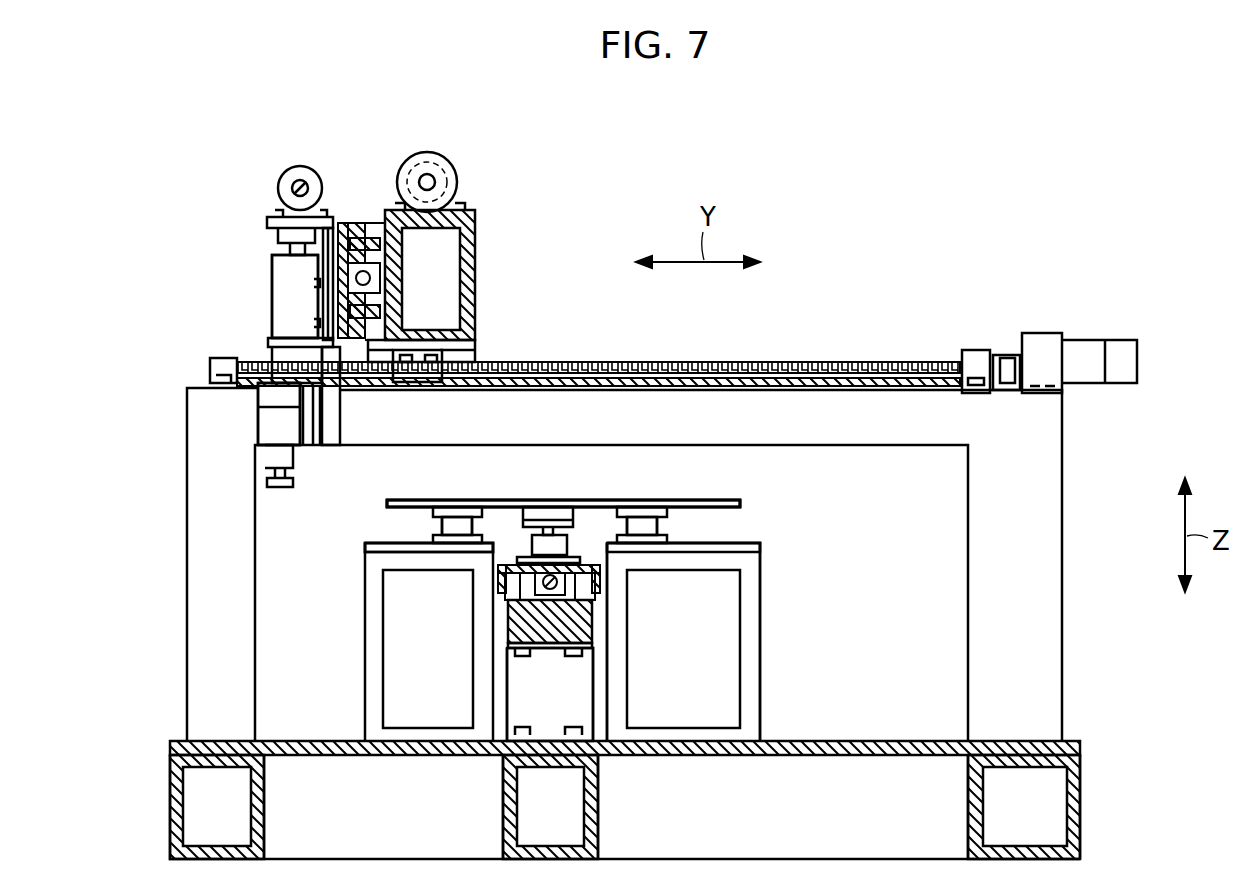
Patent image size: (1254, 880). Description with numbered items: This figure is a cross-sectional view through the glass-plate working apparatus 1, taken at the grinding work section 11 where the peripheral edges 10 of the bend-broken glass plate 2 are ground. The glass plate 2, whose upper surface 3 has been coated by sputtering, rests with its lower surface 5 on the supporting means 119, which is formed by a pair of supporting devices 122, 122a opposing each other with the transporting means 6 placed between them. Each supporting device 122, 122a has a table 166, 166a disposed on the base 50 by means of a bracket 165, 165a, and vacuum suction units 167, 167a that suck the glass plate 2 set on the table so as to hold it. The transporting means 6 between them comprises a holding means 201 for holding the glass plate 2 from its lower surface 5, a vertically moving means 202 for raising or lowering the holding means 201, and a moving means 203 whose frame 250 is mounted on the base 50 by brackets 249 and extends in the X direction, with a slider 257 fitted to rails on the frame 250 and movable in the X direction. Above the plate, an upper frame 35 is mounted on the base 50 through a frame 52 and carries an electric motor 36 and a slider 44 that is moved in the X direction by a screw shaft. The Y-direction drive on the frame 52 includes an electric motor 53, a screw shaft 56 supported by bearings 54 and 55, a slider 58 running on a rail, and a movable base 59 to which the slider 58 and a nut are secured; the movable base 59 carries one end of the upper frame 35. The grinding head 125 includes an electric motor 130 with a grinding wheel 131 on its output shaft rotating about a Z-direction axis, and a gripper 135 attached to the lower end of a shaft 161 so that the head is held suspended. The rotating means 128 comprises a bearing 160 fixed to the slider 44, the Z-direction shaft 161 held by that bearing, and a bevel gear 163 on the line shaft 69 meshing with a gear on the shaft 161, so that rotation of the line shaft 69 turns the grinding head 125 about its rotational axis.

The glass-plate working apparatus 1 is at (878, 258).
The glass plate 2 is at (742, 500).
The upper surface 3 is at (578, 500).
The lower surface 5 is at (700, 512).
The transporting means 6 is at (546, 655).
The peripheral edges 10 is at (386, 500).
The grinding work section 11 is at (780, 605).
The upper frame 35 is at (470, 240).
The electric motor 36 is at (455, 165).
The slider 44 is at (362, 225).
The base 50 is at (1082, 751).
The frame 52 is at (1062, 497).
The electric motor 53 is at (1132, 365).
The bearing 54 is at (978, 350).
The bearing 55 is at (222, 366).
The screw shaft 56 is at (905, 362).
The slider 58 is at (460, 357).
The movable base 59 is at (462, 347).
The line shaft 69 is at (300, 180).
The supporting means 119 is at (405, 550).
The supporting device 122 is at (448, 510).
The supporting device 122a is at (640, 510).
The grinding head 125 is at (256, 437).
The rotating means 128 is at (270, 260).
The electric motor 130 is at (275, 420).
The grinding wheel 131 is at (266, 482).
The gripper 135 is at (332, 414).
The bearing 160 is at (282, 292).
The shaft 161 is at (270, 342).
The bevel gear 163 is at (320, 212).
The bracket 165 is at (366, 640).
The bracket 165a is at (750, 658).
The table 166 is at (366, 546).
The table 166a is at (762, 548).
The vacuum suction units 167 is at (442, 527).
The vacuum suction units 167a is at (642, 530).
The holding means 201 is at (546, 503).
The vertically moving means 202 is at (545, 548).
The moving means 203 is at (560, 632).
The brackets 249 is at (585, 710).
The frame 250 is at (580, 635).
The slider 257 is at (502, 580).